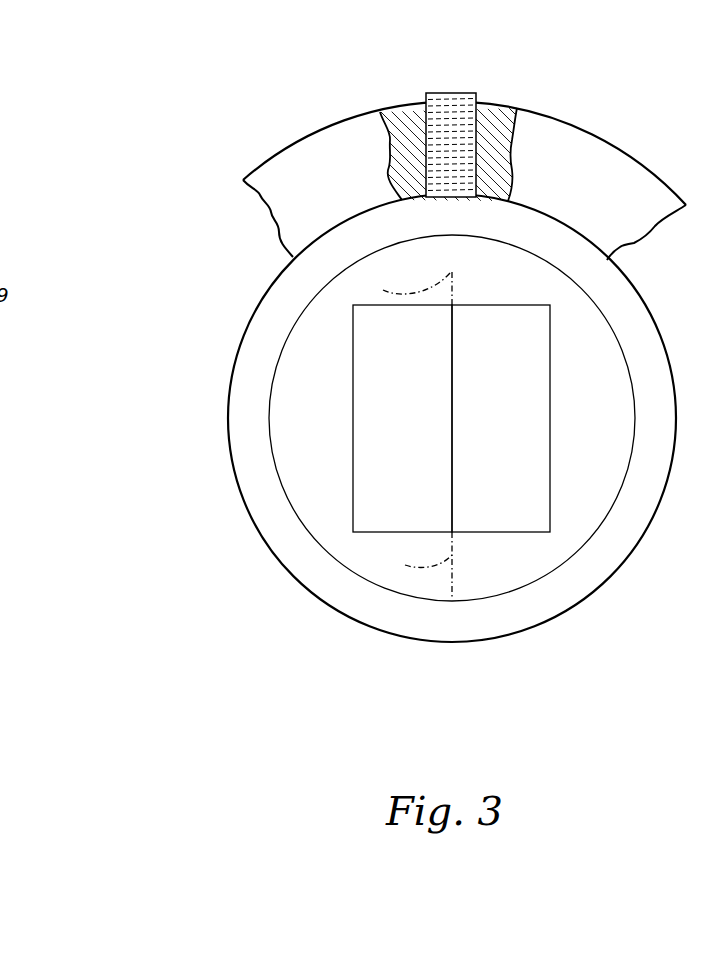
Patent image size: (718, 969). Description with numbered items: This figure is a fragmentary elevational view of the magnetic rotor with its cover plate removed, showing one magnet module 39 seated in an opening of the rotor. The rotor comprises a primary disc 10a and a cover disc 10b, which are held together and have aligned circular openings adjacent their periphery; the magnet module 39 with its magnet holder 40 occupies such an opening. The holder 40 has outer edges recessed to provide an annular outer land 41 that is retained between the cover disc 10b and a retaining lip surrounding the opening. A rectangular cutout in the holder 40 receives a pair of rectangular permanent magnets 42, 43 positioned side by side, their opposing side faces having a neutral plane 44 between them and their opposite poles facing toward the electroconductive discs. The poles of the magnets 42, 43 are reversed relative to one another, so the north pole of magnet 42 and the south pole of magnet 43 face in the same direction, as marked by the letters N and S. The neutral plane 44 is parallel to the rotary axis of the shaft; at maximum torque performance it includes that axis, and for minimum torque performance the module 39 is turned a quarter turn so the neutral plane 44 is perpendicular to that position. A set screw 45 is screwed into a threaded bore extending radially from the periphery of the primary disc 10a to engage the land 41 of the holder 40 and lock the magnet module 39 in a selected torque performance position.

The primary disc 10a is at (407, 127).
The cover disc 10b is at (317, 155).
The magnet module 39 is at (226, 360).
The magnet holder 40 is at (308, 455).
The annular outer land 41 is at (558, 237).
The permanent magnet 42 is at (360, 343).
The permanent magnet 43 is at (538, 363).
The neutral plane 44 is at (405, 434).
The set screw 45 is at (458, 92).